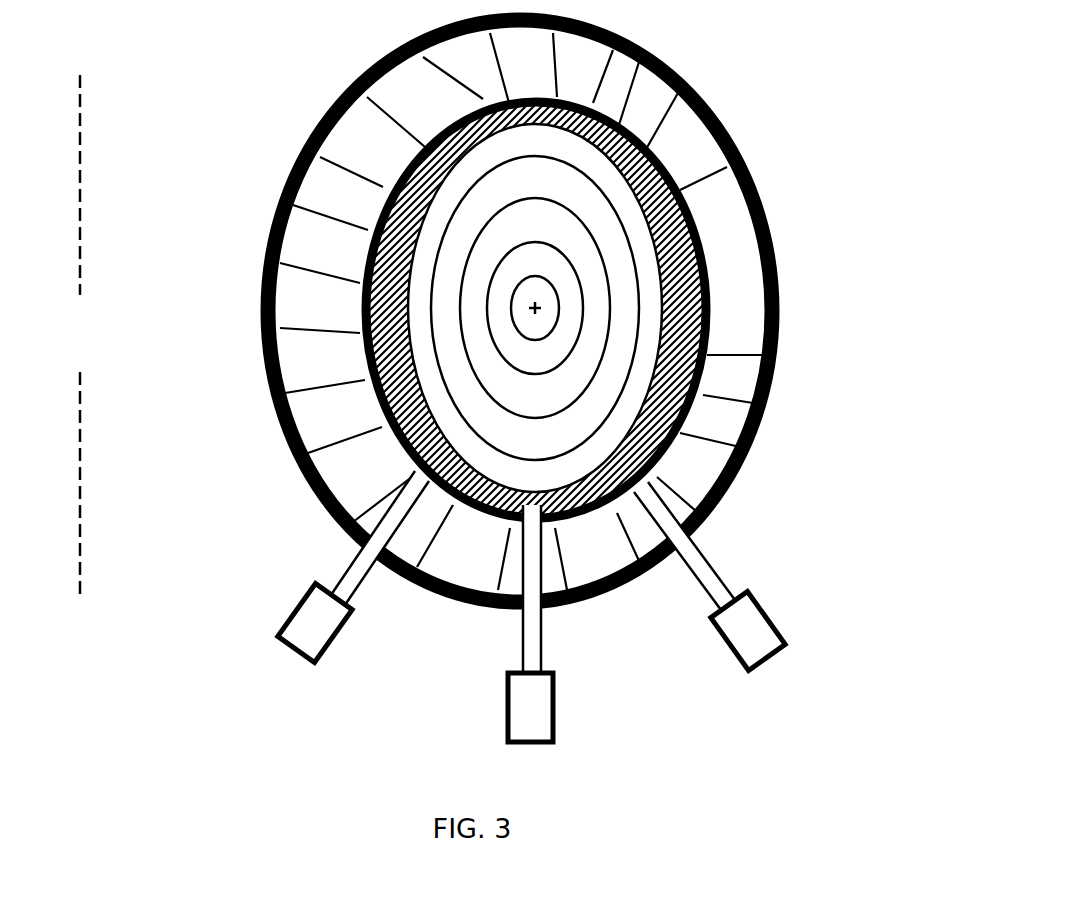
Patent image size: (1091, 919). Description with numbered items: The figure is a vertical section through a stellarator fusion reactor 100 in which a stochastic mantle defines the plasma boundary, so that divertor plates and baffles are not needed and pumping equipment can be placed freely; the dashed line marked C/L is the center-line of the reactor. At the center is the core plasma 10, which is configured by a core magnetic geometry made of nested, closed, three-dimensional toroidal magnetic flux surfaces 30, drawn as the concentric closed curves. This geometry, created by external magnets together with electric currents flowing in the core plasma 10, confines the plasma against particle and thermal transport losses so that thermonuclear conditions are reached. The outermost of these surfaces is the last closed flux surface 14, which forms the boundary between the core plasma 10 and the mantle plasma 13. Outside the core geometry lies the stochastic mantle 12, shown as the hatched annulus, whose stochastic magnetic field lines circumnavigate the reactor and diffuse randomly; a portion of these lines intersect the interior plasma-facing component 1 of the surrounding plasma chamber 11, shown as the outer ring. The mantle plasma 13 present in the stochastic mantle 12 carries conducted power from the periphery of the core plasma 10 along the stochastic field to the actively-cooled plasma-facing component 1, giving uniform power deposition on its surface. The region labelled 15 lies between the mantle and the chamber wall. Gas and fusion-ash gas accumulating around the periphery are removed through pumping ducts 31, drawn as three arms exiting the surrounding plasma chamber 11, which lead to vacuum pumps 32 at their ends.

The stellarator fusion reactor 100 is at (227, 142).
The interior plasma-facing component 1 is at (386, 58).
The core plasma 10 is at (553, 190).
The surrounding plasma chamber 11 is at (760, 454).
The stochastic mantle 12 is at (620, 128).
The mantle plasma 13 is at (652, 135).
The last closed flux surface 14 is at (696, 380).
The side radial ribs 15 is at (318, 250).
The toroidal magnetic flux surfaces 30 is at (557, 315).
The pumping ducts 31 is at (338, 580).
The vacuum pumps 32 is at (318, 652).